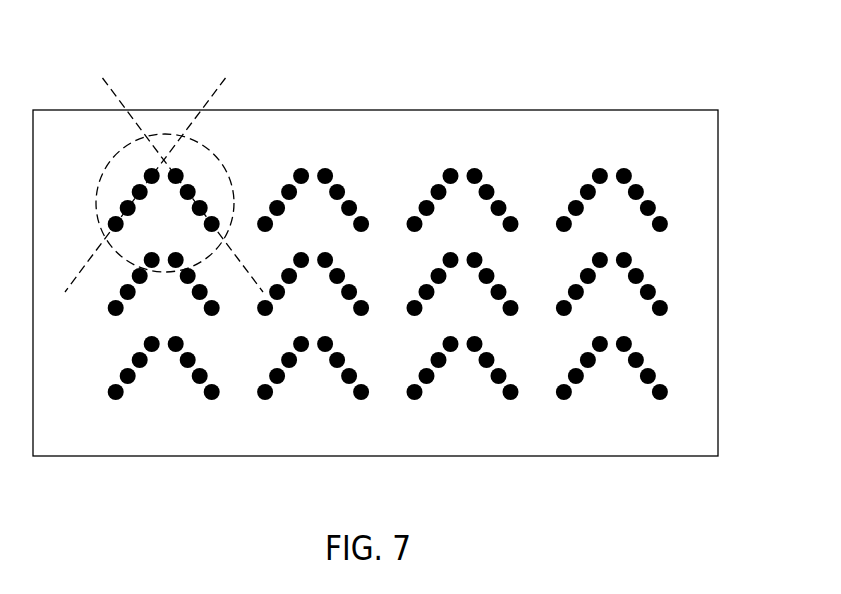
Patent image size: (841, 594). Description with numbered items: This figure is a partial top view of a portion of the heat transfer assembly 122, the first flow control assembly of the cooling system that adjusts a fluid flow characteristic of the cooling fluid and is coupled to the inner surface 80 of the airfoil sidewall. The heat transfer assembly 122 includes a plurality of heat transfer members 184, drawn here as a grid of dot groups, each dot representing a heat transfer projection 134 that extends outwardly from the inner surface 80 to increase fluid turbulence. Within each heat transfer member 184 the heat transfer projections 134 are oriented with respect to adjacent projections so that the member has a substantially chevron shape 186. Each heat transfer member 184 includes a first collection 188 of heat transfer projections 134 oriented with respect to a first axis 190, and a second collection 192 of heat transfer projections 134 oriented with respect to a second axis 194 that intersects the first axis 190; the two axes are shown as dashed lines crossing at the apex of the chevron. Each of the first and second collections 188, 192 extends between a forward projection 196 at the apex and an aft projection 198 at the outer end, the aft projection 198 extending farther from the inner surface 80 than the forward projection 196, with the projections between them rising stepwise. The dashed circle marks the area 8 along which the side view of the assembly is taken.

The inner surface 80 is at (698, 158).
The area 8 is at (224, 168).
The heat transfer assembly 122 is at (568, 176).
The heat transfer projection 134 is at (131, 188).
The heat transfer member 184 is at (193, 162).
The chevron shape 186 is at (167, 128).
The first collection 188 is at (114, 207).
The first axis 190 is at (90, 263).
The second collection 192 is at (218, 231).
The second axis 194 is at (260, 289).
The forward projection 196 is at (150, 169).
The aft projection 198 is at (123, 227).